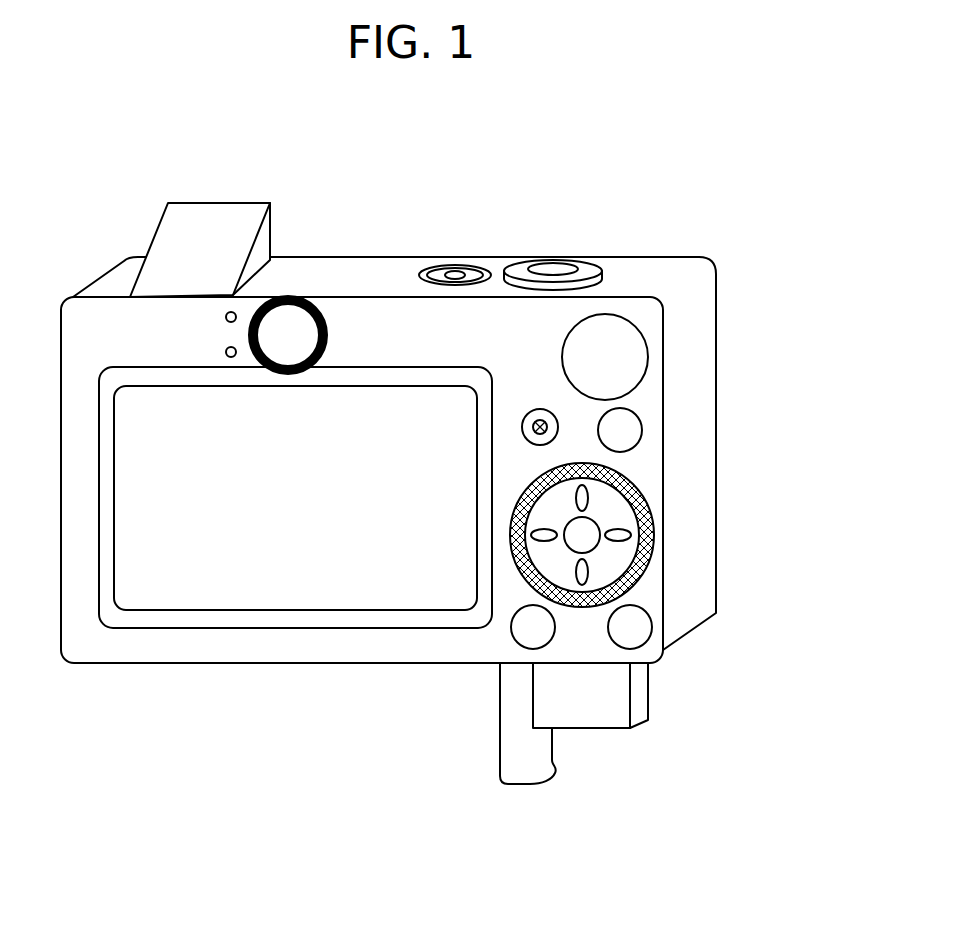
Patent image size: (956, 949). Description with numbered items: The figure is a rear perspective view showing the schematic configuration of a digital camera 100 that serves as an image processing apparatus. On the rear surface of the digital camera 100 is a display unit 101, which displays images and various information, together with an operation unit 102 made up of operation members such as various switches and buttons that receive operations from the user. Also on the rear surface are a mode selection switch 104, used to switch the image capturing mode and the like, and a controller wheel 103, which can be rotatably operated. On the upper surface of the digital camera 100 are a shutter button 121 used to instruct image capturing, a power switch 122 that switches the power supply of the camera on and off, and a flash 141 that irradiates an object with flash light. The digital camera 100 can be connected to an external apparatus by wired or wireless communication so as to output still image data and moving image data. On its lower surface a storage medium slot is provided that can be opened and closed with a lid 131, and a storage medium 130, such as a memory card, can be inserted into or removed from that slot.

The digital camera 100 is at (187, 703).
The display unit 101 is at (302, 593).
The operation unit 102 is at (560, 283).
The controller wheel 103 is at (517, 567).
The mode selection switch 104 is at (623, 332).
The shutter button 121 is at (553, 266).
The power switch 122 is at (454, 275).
The storage medium 130 is at (602, 720).
The lid 131 is at (527, 777).
The flash 141 is at (210, 218).